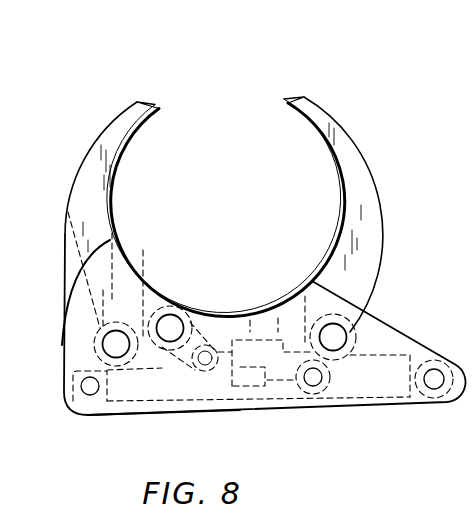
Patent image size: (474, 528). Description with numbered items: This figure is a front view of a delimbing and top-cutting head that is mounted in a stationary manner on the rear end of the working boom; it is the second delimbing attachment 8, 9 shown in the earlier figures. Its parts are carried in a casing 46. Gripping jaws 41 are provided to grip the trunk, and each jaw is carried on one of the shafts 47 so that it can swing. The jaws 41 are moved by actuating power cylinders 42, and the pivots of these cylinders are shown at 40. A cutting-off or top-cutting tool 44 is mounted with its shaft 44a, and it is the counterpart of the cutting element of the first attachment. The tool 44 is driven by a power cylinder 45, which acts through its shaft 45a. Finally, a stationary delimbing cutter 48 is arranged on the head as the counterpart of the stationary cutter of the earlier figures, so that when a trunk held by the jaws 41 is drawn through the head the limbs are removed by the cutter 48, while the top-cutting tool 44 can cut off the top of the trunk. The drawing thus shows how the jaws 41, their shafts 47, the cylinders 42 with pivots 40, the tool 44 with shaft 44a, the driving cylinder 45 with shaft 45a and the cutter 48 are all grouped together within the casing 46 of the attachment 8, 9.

The second delimbing attachment 8 is at (218, 105).
The second delimbing attachment 9 is at (139, 252).
The gripping jaws 41 is at (123, 125).
The cutting-off or top-cutting tool 44 is at (110, 240).
The shaft 44a is at (170, 328).
The casing 46 is at (65, 362).
The shafts 47 is at (116, 344).
The stationary delimbing cutter 48 is at (223, 315).
The pivots 40 is at (88, 388).
The actuating power cylinders 42 is at (127, 397).
The power cylinder 45 is at (362, 387).
The shaft 45a is at (430, 381).